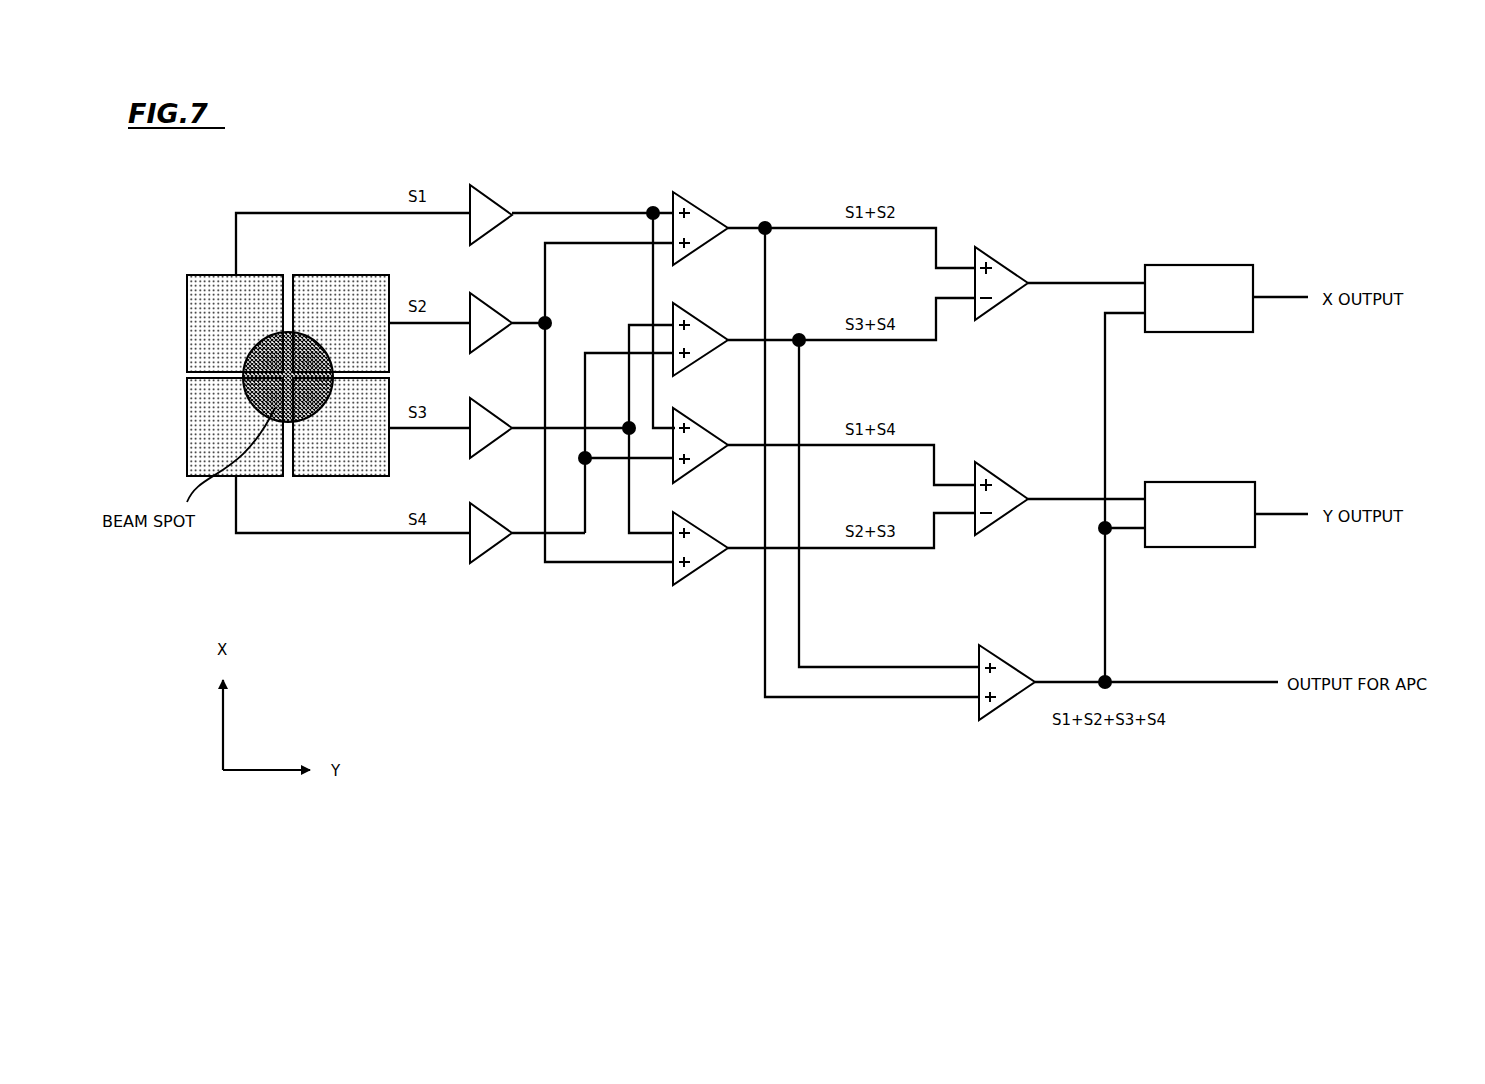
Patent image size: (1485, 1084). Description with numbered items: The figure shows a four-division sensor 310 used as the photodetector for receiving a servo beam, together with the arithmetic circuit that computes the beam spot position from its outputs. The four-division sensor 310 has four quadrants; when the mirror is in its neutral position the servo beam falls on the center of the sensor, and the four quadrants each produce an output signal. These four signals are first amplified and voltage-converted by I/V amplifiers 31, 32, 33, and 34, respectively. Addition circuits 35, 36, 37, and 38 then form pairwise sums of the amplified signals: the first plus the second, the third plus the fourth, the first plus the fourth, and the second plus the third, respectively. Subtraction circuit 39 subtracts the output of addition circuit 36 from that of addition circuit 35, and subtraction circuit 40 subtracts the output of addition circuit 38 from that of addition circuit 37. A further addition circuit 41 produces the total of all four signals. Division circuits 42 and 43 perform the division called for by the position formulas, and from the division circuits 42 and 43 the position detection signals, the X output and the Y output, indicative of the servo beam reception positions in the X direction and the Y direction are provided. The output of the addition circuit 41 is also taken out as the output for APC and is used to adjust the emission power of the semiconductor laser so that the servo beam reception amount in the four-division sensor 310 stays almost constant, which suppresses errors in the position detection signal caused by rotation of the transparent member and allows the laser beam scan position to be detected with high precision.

The four-division sensor 310 is at (210, 257).
The I/V amplifier 31 is at (490, 210).
The I/V amplifier 32 is at (490, 318).
The I/V amplifier 33 is at (490, 420).
The I/V amplifier 34 is at (490, 522).
The addition circuit 35 is at (703, 218).
The addition circuit 36 is at (703, 330).
The addition circuit 37 is at (703, 430).
The addition circuit 38 is at (703, 533).
The subtraction circuit 39 is at (1000, 260).
The subtraction circuit 40 is at (1000, 470).
The addition circuit 41 is at (1010, 665).
The division circuit 42 is at (1215, 265).
The division circuit 43 is at (1215, 482).